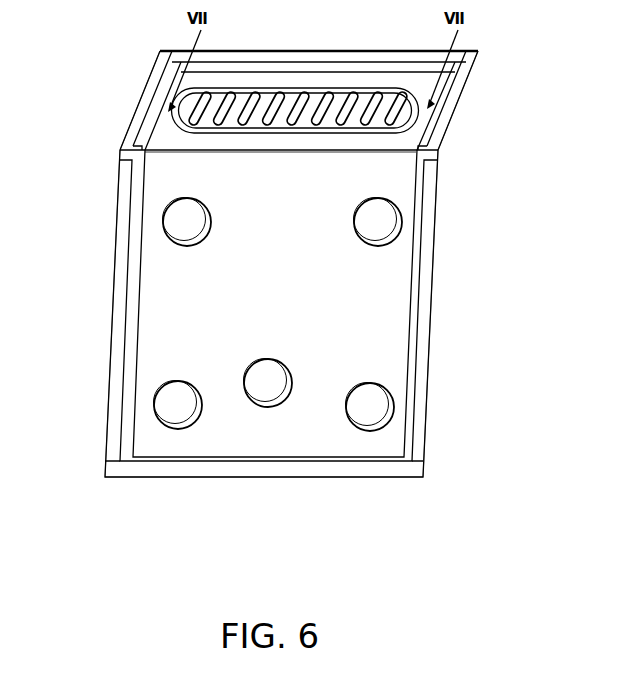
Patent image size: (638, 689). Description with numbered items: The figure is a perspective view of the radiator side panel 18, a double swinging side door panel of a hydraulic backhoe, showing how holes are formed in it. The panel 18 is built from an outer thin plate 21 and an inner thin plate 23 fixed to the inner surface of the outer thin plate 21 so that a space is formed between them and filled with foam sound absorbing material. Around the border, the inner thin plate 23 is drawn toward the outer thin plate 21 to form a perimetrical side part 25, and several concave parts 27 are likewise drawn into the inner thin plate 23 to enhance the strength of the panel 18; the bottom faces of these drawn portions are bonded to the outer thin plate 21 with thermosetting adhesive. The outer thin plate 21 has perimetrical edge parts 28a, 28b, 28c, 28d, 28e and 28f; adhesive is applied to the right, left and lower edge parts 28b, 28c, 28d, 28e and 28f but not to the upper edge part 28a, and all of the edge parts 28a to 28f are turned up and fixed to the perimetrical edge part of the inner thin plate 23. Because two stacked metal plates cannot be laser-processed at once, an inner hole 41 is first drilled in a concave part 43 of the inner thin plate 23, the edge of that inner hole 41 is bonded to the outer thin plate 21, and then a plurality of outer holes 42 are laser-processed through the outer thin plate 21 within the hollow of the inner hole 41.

The panel 18 is at (466, 46).
The outer thin plate 21 is at (410, 113).
The inner thin plate 23 is at (397, 148).
The perimetrical side part 25 is at (128, 320).
The concave part 27 is at (380, 223).
The perimetrical edge part 28a is at (233, 54).
The perimetrical edge part 28b is at (458, 73).
The perimetrical edge part 28c is at (427, 351).
The perimetrical edge part 28d is at (260, 468).
The perimetrical edge part 28e is at (113, 346).
The perimetrical edge part 28f is at (135, 95).
The inner hole 41 is at (407, 92).
The outer hole 42 is at (351, 90).
The concave part 43 is at (313, 90).